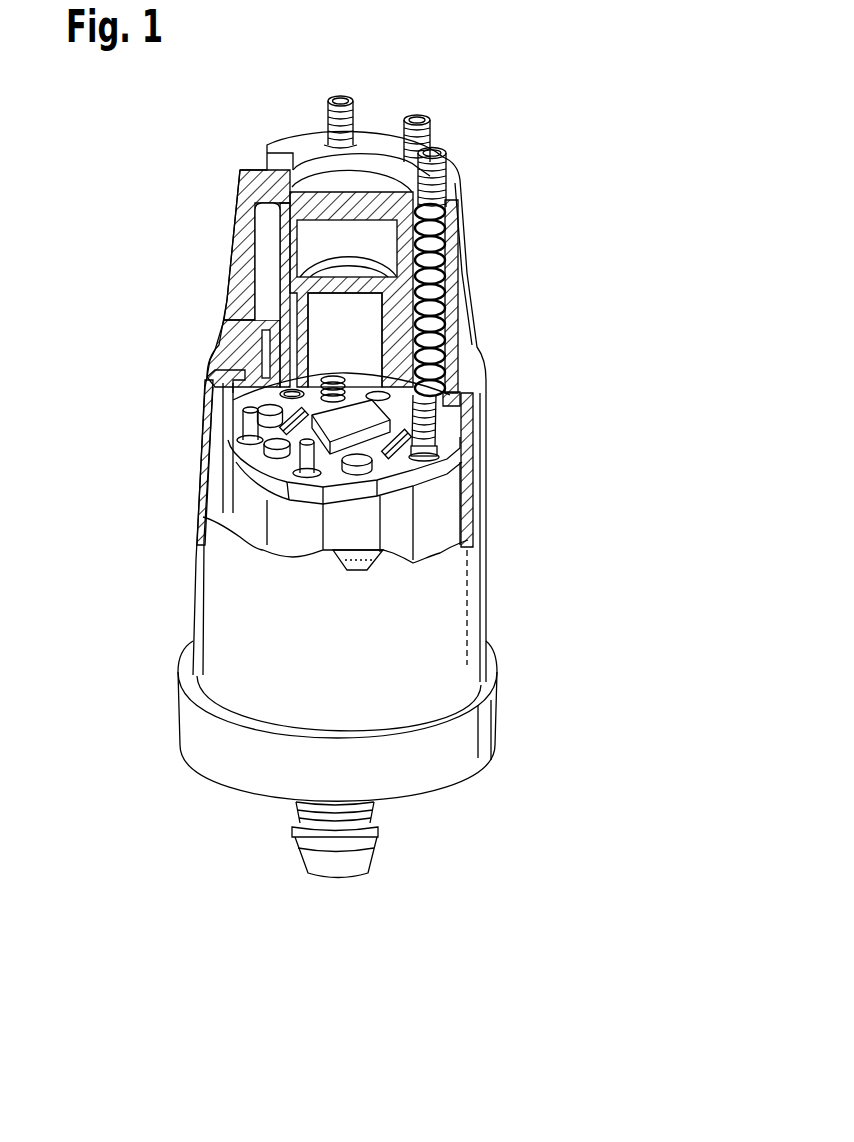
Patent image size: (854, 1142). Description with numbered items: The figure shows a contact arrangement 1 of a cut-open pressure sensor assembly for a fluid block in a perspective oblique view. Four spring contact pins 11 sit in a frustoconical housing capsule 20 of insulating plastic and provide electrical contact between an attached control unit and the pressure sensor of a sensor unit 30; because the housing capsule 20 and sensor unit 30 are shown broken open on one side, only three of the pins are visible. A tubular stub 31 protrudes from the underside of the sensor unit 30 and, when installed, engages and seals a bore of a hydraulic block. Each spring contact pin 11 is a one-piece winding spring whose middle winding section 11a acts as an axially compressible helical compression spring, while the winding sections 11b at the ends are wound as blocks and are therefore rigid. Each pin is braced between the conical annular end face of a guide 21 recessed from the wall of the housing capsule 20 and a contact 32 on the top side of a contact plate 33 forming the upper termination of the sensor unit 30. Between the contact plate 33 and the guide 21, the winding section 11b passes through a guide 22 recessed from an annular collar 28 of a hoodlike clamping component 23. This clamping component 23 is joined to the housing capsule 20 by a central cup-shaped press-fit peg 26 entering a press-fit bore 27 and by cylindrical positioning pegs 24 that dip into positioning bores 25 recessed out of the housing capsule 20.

The contact arrangement 1 is at (467, 135).
The spring contact pin 11 is at (448, 366).
The middle winding section 11a is at (443, 340).
The winding section forming end region 11b is at (404, 130).
The housing capsule 20 is at (460, 277).
The guide 21 is at (447, 240).
The guide 22 is at (445, 393).
The clamping component 23 is at (247, 380).
The positioning peg 24 is at (257, 347).
The positioning bore 25 is at (267, 268).
The press-fit peg 26 is at (300, 317).
The press-fit bore 27 is at (307, 237).
The annular collar 28 is at (413, 545).
The sensor unit 30 is at (504, 708).
The tubular stub 31 is at (313, 857).
The contact 32 is at (437, 452).
The contact plate 33 is at (250, 470).